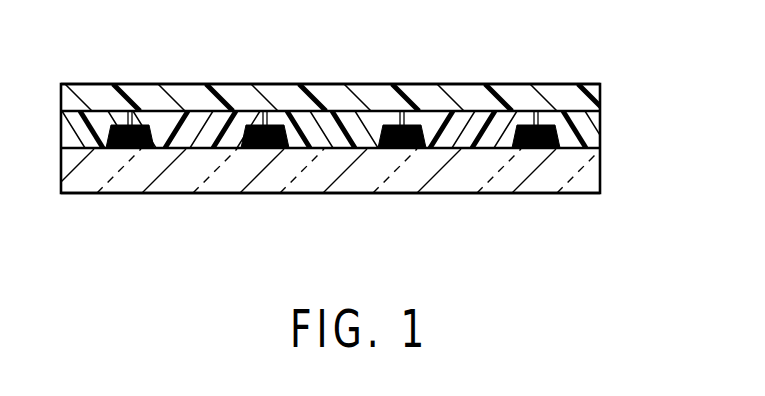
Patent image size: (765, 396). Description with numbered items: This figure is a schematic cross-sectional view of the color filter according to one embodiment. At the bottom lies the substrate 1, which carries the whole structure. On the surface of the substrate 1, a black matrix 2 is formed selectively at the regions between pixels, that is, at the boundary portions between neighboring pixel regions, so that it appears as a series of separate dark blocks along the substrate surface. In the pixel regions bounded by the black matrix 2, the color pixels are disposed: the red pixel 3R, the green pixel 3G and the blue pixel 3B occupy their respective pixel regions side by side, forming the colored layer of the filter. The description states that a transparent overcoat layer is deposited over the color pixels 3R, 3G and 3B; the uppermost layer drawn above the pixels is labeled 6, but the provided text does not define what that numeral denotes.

The substrate 1 is at (601, 159).
The black matrix 2 is at (538, 145).
The red pixel 3R is at (188, 143).
The green pixel 3G is at (323, 143).
The blue pixel 3B is at (467, 145).
The sealing layer 6 is at (601, 93).